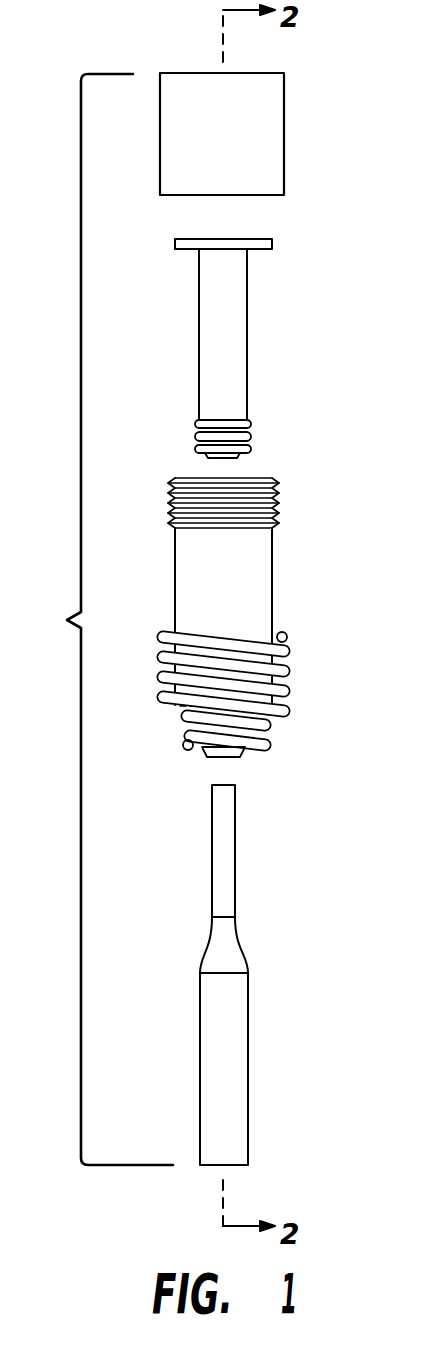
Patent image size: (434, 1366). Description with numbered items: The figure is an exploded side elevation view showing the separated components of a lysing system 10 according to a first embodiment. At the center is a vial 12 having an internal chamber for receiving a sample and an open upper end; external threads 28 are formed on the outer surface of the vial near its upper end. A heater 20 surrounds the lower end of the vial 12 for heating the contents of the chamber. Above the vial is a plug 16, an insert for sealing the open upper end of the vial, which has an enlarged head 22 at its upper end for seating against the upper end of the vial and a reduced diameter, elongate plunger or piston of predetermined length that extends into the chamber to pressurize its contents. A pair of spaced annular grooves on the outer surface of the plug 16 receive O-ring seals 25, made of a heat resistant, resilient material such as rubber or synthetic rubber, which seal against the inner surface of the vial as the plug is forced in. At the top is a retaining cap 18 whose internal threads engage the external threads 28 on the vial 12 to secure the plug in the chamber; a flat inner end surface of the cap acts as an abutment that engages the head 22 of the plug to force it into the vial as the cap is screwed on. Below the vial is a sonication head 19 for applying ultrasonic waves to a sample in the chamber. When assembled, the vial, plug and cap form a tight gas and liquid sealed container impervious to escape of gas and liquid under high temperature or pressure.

The lysing system 10 is at (101, 619).
The vial 12 is at (262, 592).
The plug 16 is at (248, 356).
The retaining cap 18 is at (285, 132).
The sonication head 19 is at (243, 1002).
The heater 20 is at (225, 636).
The enlarged head 22 is at (273, 245).
The O-ring seals 25 is at (253, 427).
The external threads 28 is at (279, 511).